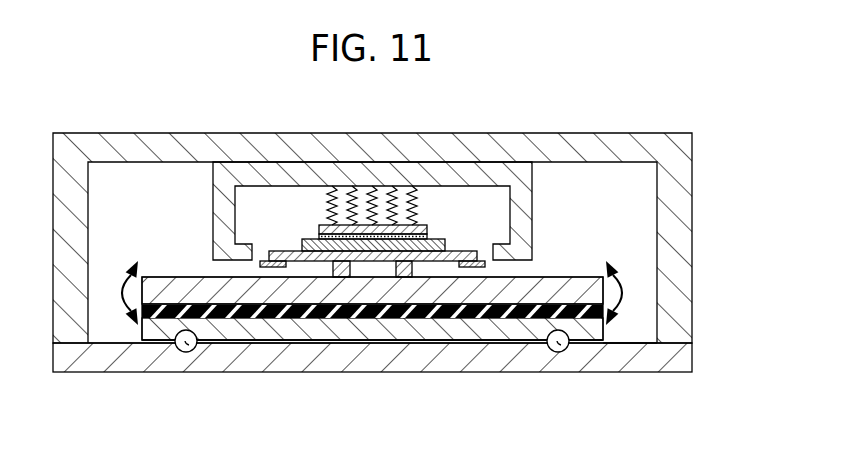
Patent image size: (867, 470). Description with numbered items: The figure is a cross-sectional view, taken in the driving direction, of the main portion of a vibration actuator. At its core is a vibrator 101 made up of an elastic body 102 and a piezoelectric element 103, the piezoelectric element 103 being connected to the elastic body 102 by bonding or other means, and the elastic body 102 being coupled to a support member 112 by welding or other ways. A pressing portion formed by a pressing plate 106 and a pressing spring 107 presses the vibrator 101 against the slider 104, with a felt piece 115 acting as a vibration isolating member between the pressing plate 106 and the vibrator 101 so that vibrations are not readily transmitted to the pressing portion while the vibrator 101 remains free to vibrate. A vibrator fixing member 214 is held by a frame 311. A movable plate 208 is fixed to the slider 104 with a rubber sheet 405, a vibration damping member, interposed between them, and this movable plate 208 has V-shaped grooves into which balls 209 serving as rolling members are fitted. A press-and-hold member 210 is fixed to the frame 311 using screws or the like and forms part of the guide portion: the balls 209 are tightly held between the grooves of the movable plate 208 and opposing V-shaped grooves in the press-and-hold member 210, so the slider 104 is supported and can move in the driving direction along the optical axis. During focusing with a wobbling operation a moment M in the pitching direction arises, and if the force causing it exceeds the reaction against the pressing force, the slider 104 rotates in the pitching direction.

The frame 311 is at (595, 152).
The vibrator fixing member 214 is at (525, 203).
The slider 104 is at (568, 285).
The pressing plate 106 is at (319, 229).
The felt piece 115 is at (320, 238).
The pressing spring 107 is at (417, 198).
The balls 209 is at (178, 350).
The support member 112 is at (267, 268).
The piezoelectric element 103 is at (299, 252).
The elastic body 102 is at (320, 245).
The vibrator 101 is at (357, 347).
The press-and-hold member 210 is at (397, 363).
The movable plate 208 is at (577, 346).
The rubber sheet 405 is at (607, 343).